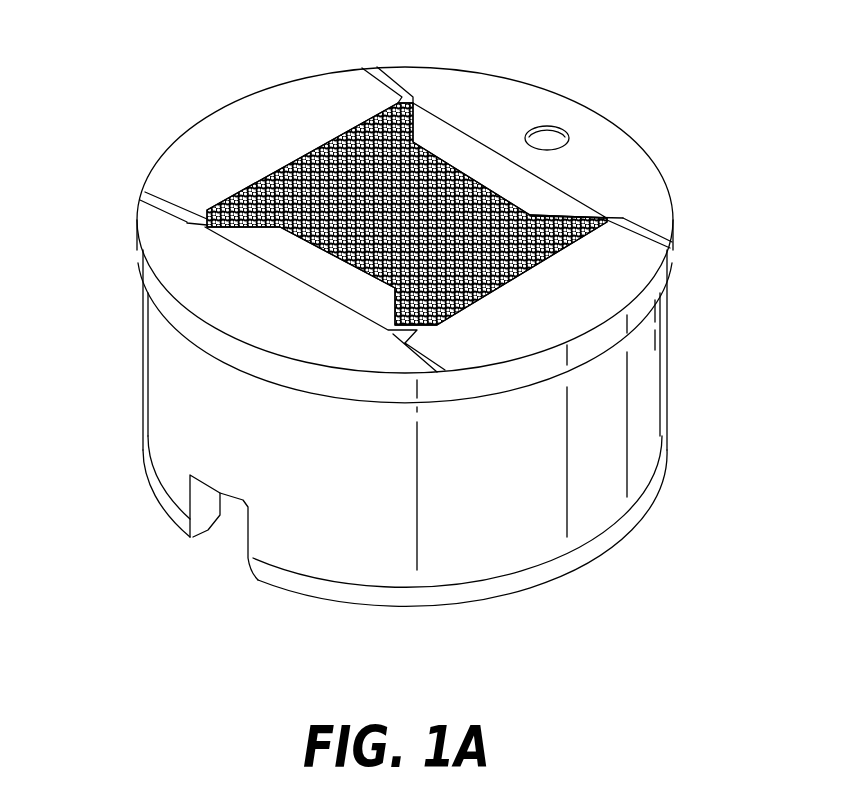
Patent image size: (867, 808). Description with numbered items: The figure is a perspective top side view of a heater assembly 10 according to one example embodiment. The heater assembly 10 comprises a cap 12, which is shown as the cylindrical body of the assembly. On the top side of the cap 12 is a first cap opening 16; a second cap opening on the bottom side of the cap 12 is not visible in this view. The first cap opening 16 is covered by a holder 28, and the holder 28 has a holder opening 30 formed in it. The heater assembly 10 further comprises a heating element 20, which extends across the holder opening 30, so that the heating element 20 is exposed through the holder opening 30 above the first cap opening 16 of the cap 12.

The heater assembly 10 is at (400, 314).
The cap 12 is at (668, 294).
The first cap opening 16 is at (486, 152).
The heating element 20 is at (358, 202).
The holder 28 is at (150, 192).
The holder opening 30 is at (250, 244).